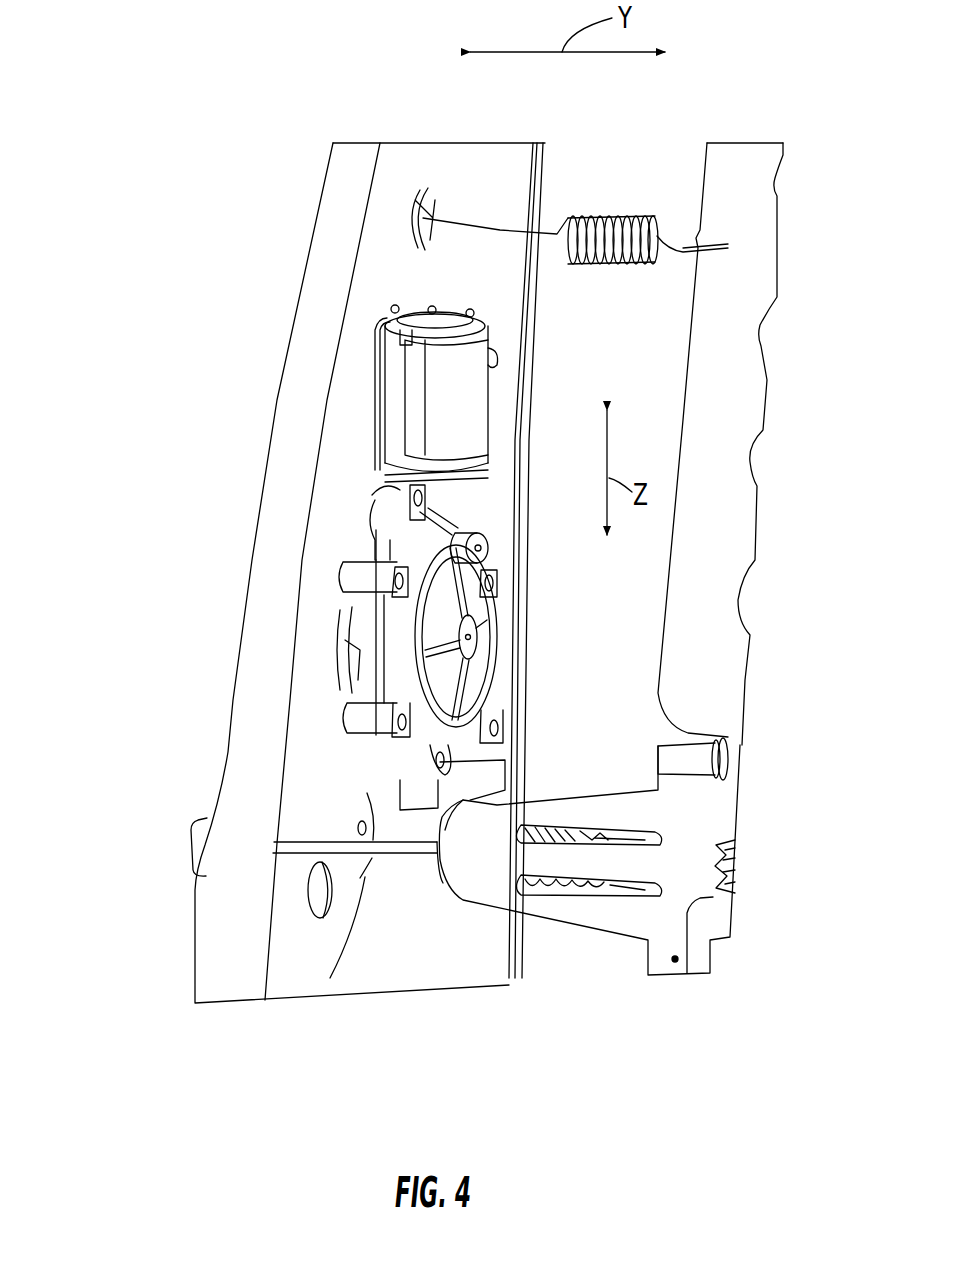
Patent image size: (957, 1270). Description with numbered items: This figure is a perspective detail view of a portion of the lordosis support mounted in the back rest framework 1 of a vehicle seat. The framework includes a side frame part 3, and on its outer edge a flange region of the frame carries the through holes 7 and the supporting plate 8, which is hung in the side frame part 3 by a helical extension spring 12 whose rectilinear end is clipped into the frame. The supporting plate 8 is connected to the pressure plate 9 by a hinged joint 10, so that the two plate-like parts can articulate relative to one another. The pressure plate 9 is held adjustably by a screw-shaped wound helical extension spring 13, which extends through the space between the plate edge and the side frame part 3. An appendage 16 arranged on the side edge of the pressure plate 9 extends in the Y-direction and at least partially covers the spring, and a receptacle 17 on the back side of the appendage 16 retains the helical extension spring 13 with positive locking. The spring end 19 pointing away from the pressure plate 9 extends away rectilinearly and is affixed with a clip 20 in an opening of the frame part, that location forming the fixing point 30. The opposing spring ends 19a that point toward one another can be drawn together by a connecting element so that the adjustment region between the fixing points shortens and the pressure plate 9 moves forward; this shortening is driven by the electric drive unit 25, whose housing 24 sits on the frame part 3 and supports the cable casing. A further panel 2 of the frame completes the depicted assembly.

The back rest framework 1 is at (305, 228).
The outer frame rail 2 is at (315, 318).
The side frame part 3 is at (283, 487).
The through hole 7 is at (758, 457).
The supporting plate 8 is at (727, 357).
The pressure plate 9 is at (677, 959).
The hinged joint 10 is at (742, 762).
The helical extension spring 12 is at (598, 220).
The helical extension spring 13 is at (589, 901).
The appendage 16 is at (620, 917).
The receptacle 17 is at (615, 890).
The spring end 19 is at (265, 1000).
The spring end 19a is at (585, 890).
The clip 20 is at (197, 852).
The housing 24 is at (385, 635).
The electric drive unit 25 is at (365, 500).
The fixing point 30 is at (134, 868).